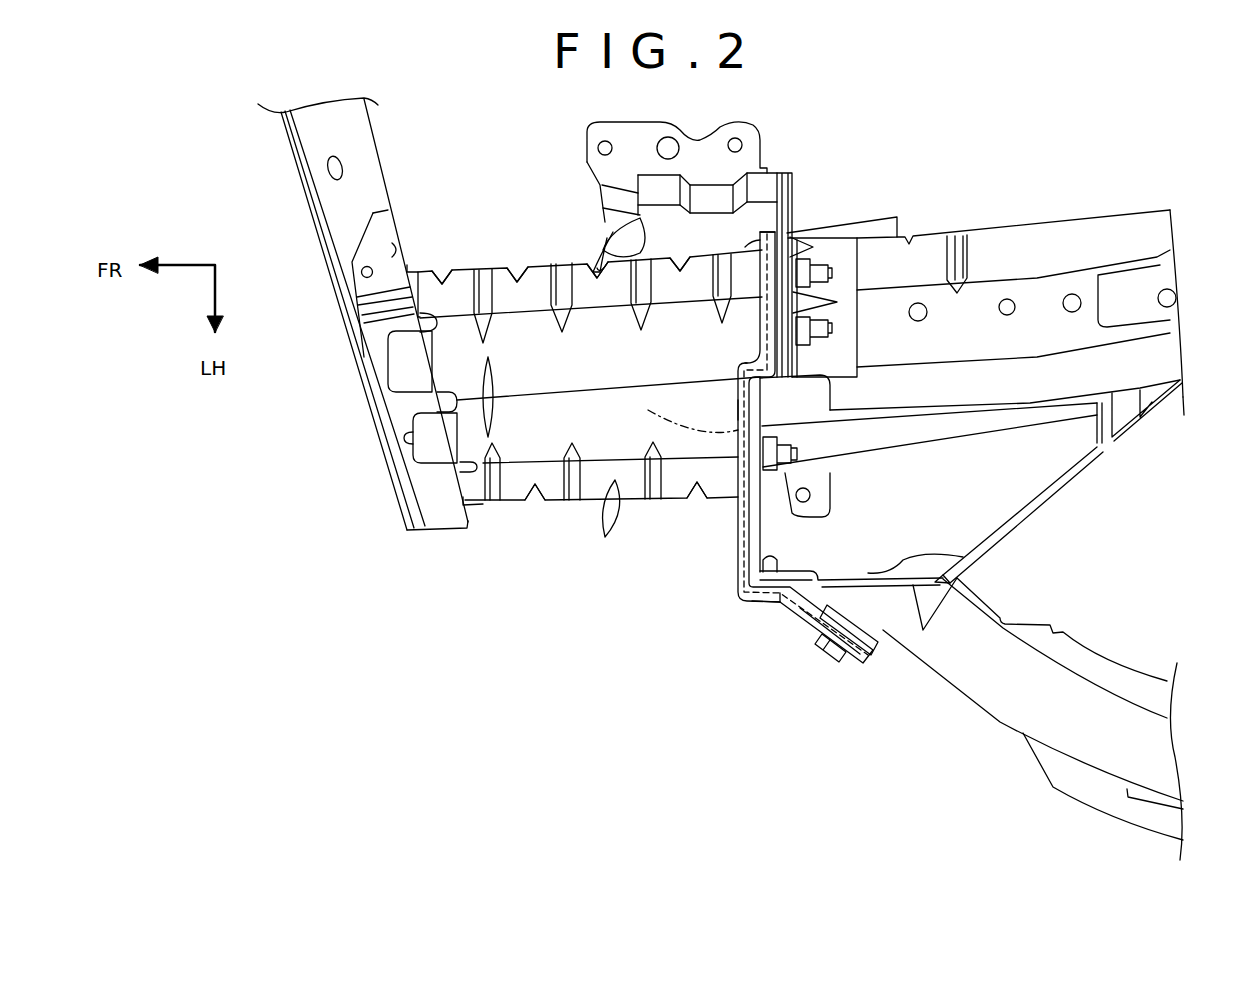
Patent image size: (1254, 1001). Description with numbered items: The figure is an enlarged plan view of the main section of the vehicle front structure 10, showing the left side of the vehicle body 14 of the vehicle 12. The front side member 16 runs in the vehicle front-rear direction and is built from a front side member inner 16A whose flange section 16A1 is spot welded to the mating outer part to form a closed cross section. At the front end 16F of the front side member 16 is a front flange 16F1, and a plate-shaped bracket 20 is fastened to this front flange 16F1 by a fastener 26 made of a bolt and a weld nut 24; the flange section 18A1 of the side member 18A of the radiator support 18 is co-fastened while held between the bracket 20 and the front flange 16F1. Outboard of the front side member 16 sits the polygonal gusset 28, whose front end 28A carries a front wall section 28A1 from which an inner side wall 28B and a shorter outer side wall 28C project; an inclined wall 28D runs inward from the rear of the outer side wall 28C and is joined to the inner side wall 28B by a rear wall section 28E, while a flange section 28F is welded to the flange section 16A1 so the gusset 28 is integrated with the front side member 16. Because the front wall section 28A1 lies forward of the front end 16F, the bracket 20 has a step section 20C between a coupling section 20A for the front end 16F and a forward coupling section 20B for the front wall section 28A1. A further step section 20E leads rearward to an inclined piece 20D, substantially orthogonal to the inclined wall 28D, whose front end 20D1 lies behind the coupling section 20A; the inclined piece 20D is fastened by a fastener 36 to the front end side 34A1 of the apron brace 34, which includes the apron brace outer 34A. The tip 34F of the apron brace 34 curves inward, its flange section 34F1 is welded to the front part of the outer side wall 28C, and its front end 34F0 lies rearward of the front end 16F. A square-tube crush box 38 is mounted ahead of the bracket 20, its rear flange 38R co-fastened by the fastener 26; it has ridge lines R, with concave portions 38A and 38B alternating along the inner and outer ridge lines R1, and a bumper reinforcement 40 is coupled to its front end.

The vehicle front structure 10 is at (668, 628).
The vehicle 12 is at (384, 679).
The vehicle body 14 is at (1177, 215).
The front side member 16 is at (980, 268).
The front side member inner 16A is at (1013, 273).
The flange section 16A1 is at (957, 383).
The front end 16F is at (797, 229).
The front flange 16F1 is at (817, 228).
The radiator support 18 is at (740, 171).
The side member 18A is at (740, 171).
The flange section 18A1 is at (760, 242).
The bracket 20 is at (761, 472).
The coupling section 20A is at (760, 290).
The coupling section 20B is at (745, 420).
The step section 20C is at (748, 362).
The inclined piece 20D is at (813, 625).
The front end 20D1 is at (783, 602).
The step section 20E is at (763, 600).
The weld nut 24 is at (830, 330).
The fastener 26 is at (803, 454).
The gusset 28 is at (986, 479).
The front end 28A is at (888, 501).
The front wall section 28A1 is at (825, 515).
The inner side wall 28B is at (828, 395).
The outer side wall 28C is at (960, 567).
The inclined wall 28D is at (1068, 476).
The rear wall section 28E is at (1115, 425).
The flange section 28F is at (998, 405).
The apron brace 34 is at (971, 695).
The apron brace outer 34A is at (1001, 703).
The front end side 34A1 is at (884, 632).
The tip 34F is at (843, 562).
The front end 34F0 is at (815, 575).
The flange section 34F1 is at (958, 583).
The fastener 36 is at (852, 660).
The crush box 38 is at (575, 388).
The concave portion 38A is at (483, 285).
The concave portion 38B is at (513, 258).
The rear flange 38R is at (664, 415).
The bumper reinforcement 40 is at (428, 487).
The ridge line R is at (518, 318).
The ridge line R1 is at (609, 413).